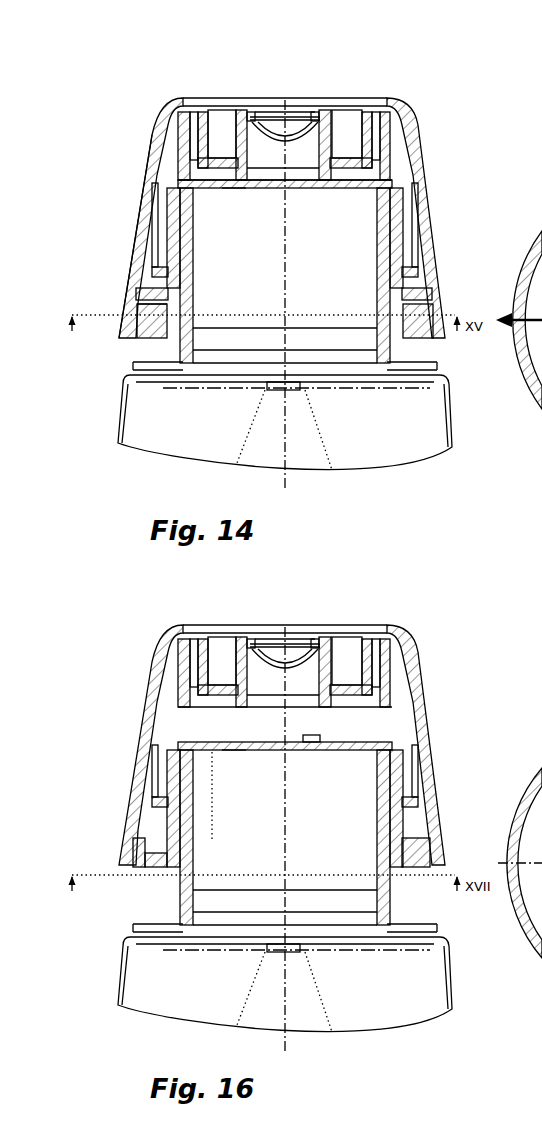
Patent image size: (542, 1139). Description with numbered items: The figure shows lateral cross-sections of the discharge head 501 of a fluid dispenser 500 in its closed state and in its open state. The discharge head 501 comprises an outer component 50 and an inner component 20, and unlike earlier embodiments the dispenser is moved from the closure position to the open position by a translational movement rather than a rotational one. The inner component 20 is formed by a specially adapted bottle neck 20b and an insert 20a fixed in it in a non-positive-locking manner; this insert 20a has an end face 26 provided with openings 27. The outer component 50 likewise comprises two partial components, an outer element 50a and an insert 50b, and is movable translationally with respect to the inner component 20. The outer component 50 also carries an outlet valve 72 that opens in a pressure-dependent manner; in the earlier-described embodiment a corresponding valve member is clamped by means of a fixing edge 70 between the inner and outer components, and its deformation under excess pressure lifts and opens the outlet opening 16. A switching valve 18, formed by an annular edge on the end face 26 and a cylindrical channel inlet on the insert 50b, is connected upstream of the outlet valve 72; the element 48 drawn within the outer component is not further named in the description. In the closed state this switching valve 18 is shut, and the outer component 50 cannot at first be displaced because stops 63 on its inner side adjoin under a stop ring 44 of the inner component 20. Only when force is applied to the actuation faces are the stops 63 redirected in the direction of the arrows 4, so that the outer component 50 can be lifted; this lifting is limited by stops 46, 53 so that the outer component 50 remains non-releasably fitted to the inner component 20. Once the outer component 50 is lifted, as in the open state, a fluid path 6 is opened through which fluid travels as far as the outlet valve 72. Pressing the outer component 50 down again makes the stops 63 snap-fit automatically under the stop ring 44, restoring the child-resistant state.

In FIG. 14, the fluid dispenser 500 is at (136, 102).
In FIG. 16, the fluid dispenser 500 is at (132, 679).
In FIG. 14, the discharge head 501 is at (112, 296).
In FIG. 14, the outer component 50 is at (125, 335).
In FIG. 16, the outer component 50 is at (133, 844).
In FIG. 14, the outer element 50a is at (220, 104).
In FIG. 14, the insert 50b is at (194, 135).
In FIG. 14, the stop 53 is at (156, 276).
In FIG. 14, the fixing edge 70 is at (243, 121).
In FIG. 14, the outlet valve 72 is at (261, 122).
In FIG. 16, the outlet valve 72 is at (267, 660).
In FIG. 14, the outlet opening 16 is at (285, 140).
In FIG. 14, the cap insert 48 is at (297, 186).
In FIG. 16, the cap insert 48 is at (290, 752).
In FIG. 14, the openings 27 is at (233, 189).
In FIG. 16, the openings 27 is at (210, 742).
In FIG. 14, the switching valve 18 is at (323, 189).
In FIG. 16, the switching valve 18 is at (327, 744).
In FIG. 14, the end face 26 is at (354, 189).
In FIG. 16, the end face 26 is at (320, 752).
In FIG. 14, the stop 46 is at (405, 232).
In FIG. 14, the stops 63 is at (416, 300).
In FIG. 14, the stop ring 44 is at (426, 338).
In FIG. 14, the inner component 20 is at (176, 334).
In FIG. 16, the inner component 20 is at (178, 877).
In FIG. 14, the insert 20a is at (167, 341).
In FIG. 14, the bottle neck 20b is at (172, 297).
In FIG. 14, the arrows 4 is at (540, 358).
In FIG. 16, the fluid path 6 is at (212, 798).